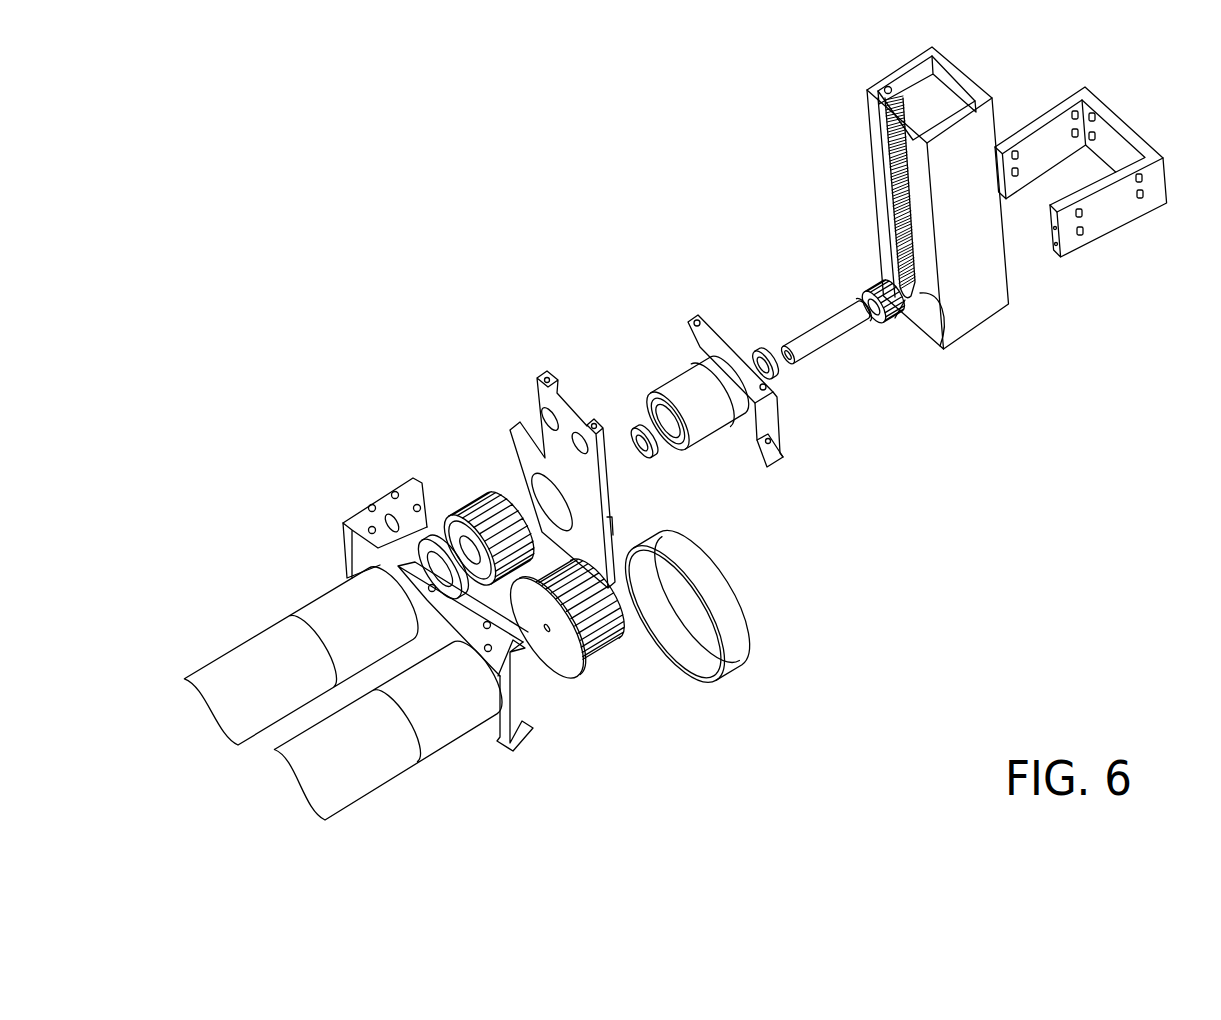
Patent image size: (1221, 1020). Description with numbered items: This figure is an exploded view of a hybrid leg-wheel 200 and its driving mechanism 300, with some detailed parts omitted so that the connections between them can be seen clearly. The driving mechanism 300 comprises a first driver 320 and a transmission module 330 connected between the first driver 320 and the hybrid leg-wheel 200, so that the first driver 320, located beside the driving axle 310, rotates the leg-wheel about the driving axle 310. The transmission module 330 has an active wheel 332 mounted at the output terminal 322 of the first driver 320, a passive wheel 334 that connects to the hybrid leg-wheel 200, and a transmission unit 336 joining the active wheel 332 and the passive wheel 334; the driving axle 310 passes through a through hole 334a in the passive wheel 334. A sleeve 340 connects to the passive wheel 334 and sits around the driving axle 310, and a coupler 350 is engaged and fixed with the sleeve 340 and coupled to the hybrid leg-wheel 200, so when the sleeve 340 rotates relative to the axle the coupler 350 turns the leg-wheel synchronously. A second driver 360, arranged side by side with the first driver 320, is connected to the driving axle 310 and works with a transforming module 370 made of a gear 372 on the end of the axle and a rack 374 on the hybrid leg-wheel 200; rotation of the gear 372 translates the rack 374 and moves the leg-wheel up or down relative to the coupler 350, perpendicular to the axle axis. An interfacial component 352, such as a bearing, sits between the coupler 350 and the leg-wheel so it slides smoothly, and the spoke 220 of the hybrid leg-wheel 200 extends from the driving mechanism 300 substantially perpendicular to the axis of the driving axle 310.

The hybrid leg-wheel 200 is at (982, 53).
The spoke 220 is at (988, 118).
The driving mechanism 300 is at (438, 339).
The driving axle 310 is at (818, 327).
The first driver 320 is at (447, 727).
The output terminal 322 is at (523, 653).
The transmission module 330 is at (723, 717).
The active wheel 332 is at (605, 652).
The passive wheel 334 is at (543, 667).
The through hole 334a is at (443, 517).
The transmission unit 336 is at (674, 628).
The sleeve 340 is at (700, 433).
The coupler 350 is at (1117, 213).
The interfacial component 352 is at (1152, 207).
The second driver 360 is at (330, 605).
The transforming module 370 is at (1018, 373).
The gear 372 is at (897, 312).
The rack 374 is at (922, 300).